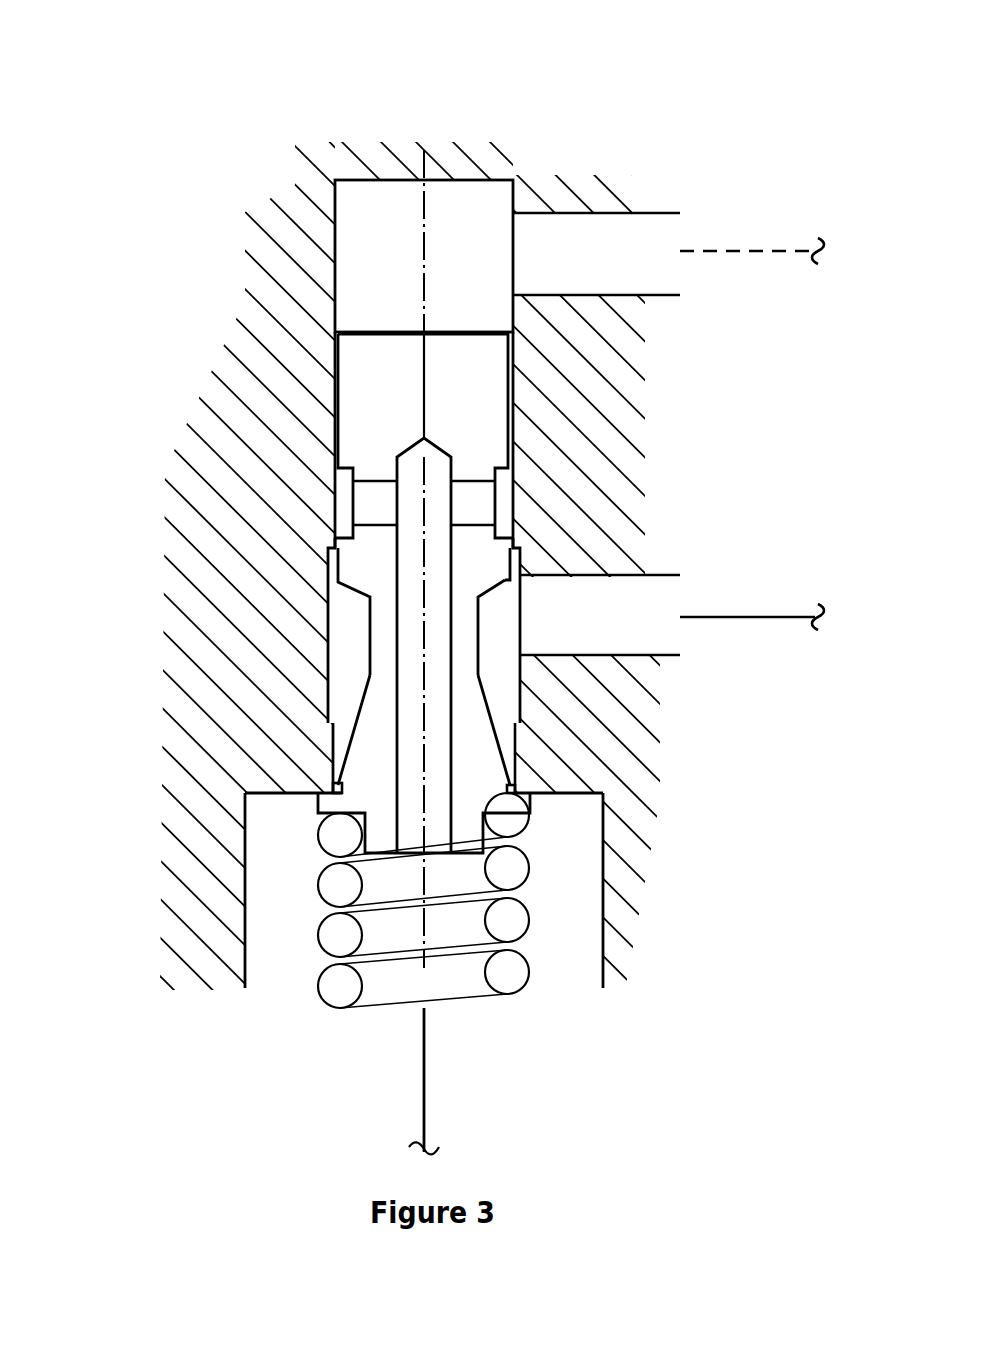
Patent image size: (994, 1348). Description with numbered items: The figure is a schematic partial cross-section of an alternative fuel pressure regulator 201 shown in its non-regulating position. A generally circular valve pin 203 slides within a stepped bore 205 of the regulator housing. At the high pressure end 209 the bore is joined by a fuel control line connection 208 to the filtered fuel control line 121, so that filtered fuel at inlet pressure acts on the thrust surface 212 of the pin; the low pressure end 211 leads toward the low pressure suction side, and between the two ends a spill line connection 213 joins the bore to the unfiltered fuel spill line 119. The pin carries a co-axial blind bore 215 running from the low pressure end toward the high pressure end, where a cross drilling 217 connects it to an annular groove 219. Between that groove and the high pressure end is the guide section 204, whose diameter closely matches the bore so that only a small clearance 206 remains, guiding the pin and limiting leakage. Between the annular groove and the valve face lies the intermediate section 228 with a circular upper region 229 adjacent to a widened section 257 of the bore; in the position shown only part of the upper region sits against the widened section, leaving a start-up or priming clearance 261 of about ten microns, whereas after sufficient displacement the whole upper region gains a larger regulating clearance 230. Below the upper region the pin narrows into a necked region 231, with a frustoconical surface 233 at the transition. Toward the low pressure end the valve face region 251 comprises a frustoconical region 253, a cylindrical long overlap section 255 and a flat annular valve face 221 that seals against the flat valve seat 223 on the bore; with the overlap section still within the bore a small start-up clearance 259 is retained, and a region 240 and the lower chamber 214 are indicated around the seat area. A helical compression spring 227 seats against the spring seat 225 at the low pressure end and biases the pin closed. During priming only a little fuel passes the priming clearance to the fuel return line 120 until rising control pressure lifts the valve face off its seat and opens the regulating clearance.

The fuel pressure regulator 201 is at (590, 100).
The high pressure end 209 is at (394, 214).
The thrust surface 212 is at (335, 310).
The fuel control line connection 208 is at (607, 242).
The filtered fuel control line 121 is at (747, 244).
The guide section 204 is at (355, 390).
The valve pin 203 is at (515, 370).
The stepped bore 205 is at (515, 408).
The small clearance 206 is at (335, 440).
The cross drilling 217 is at (375, 497).
The annular groove 219 is at (352, 527).
The start-up or priming clearance 261 is at (514, 542).
The regulating clearance 230 is at (514, 561).
The upper region 229 is at (514, 567).
The spill line connection 213 is at (695, 578).
The unfiltered fuel spill line 119 is at (745, 618).
The blind bore 215 is at (408, 568).
The frustoconical surface 233 is at (340, 632).
The intermediate section 228 is at (358, 592).
The necked region 231 is at (495, 678).
The valve face region 251 is at (482, 660).
The widened section 257 is at (352, 728).
The start-up clearance 259 is at (522, 792).
The frustoconical region 253 is at (340, 789).
The cylindrical long overlap section 255 is at (320, 797).
The flat valve seat 223 is at (527, 797).
The retainer lip 240 is at (527, 803).
The spring seat 225 is at (522, 808).
The flat annular valve face 221 is at (333, 795).
The spring chamber 214 is at (295, 957).
The helical compression spring 227 is at (334, 990).
The low pressure end 211 is at (554, 951).
The fuel return line 120 is at (422, 1077).